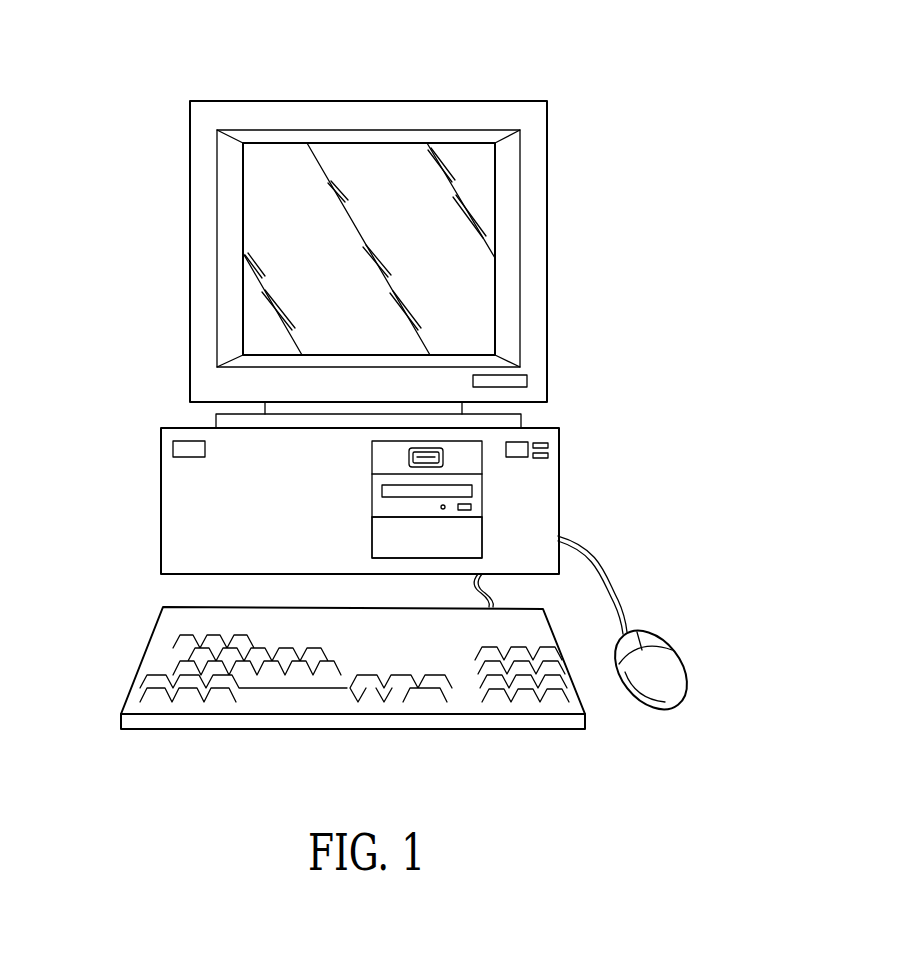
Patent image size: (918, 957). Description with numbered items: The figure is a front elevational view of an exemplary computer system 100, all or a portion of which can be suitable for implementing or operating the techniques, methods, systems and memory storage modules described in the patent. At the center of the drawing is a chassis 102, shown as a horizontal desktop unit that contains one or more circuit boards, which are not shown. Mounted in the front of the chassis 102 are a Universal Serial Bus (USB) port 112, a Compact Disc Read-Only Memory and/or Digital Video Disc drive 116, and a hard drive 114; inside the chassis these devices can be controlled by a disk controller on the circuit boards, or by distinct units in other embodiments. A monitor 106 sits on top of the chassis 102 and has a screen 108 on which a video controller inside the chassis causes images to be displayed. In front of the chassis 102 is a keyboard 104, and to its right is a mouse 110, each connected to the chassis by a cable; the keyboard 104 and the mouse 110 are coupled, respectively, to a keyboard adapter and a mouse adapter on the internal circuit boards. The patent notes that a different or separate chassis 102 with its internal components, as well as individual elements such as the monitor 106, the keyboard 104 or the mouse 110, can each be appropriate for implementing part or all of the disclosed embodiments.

The computer system 100 is at (540, 78).
The chassis 102 is at (161, 499).
The keyboard 104 is at (145, 653).
The monitor 106 is at (262, 100).
The screen 108 is at (288, 253).
The mouse 110 is at (670, 660).
The Universal Serial Bus (USB) port 112 is at (445, 455).
The hard drive 114 is at (473, 535).
The Compact Disc Read-Only Memory (CD-ROM) and/or Digital Video Disc (DVD) drive 116 is at (475, 497).